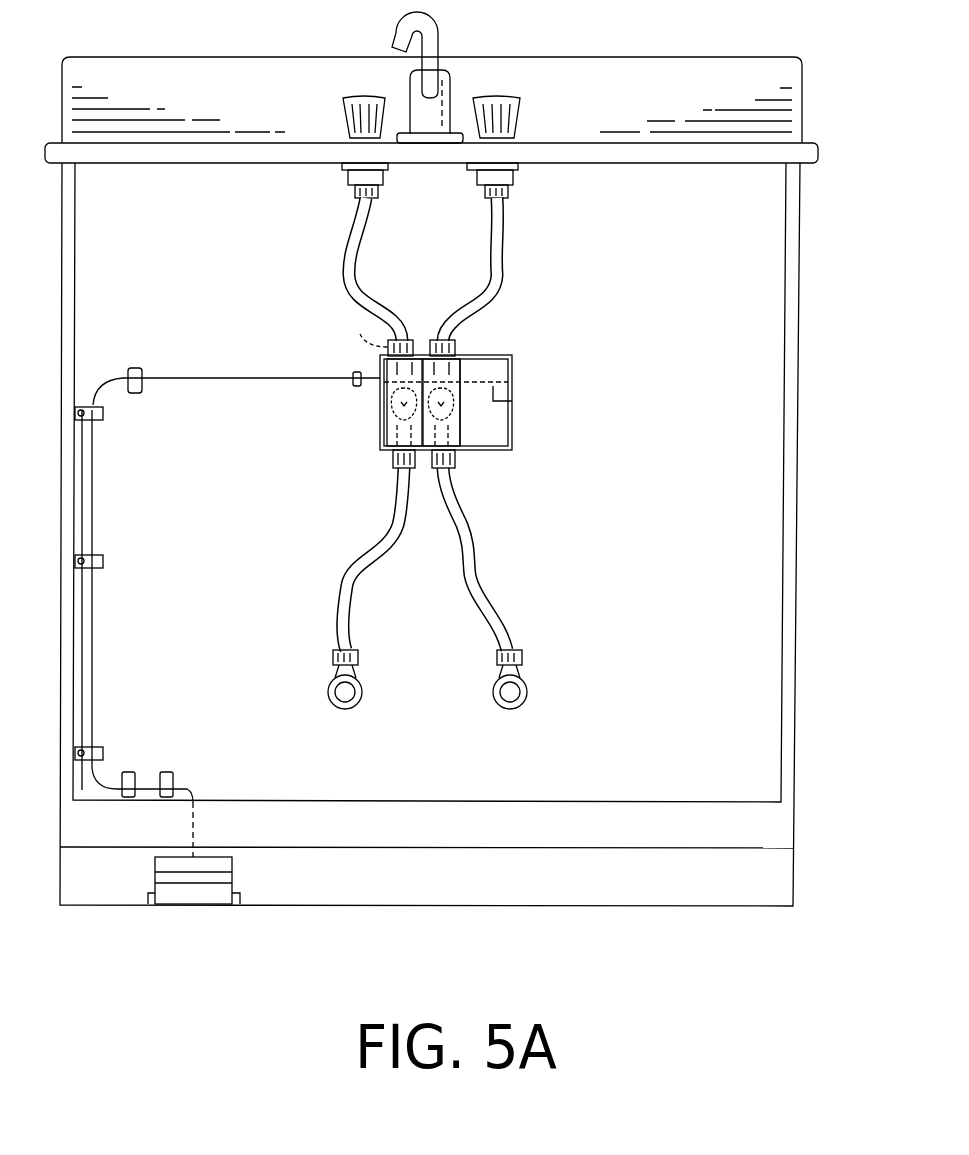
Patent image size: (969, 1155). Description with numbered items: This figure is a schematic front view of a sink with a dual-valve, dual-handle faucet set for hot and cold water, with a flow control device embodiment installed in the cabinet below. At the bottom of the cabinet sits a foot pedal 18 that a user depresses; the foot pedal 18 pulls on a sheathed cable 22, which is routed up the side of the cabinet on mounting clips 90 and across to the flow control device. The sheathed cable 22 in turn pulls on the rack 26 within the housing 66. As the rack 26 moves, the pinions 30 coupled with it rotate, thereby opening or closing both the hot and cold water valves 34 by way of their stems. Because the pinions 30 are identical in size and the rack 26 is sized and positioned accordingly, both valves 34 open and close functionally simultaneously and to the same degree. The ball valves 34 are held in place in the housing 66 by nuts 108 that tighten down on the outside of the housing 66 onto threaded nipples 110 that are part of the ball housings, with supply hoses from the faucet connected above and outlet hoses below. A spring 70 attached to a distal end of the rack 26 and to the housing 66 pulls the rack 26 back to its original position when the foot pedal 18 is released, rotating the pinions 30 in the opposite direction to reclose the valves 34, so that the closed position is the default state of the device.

The foot pedal 18 is at (234, 878).
The sheathed cable 22 is at (93, 652).
The rack 26 is at (465, 377).
The pinion 30 is at (383, 403).
The ball valve 34 is at (457, 435).
The housing 66 is at (514, 418).
The spring 70 is at (513, 401).
The mounting bracket 90 is at (103, 558).
The nut 108 is at (392, 461).
The threaded nipple 110 is at (457, 339).